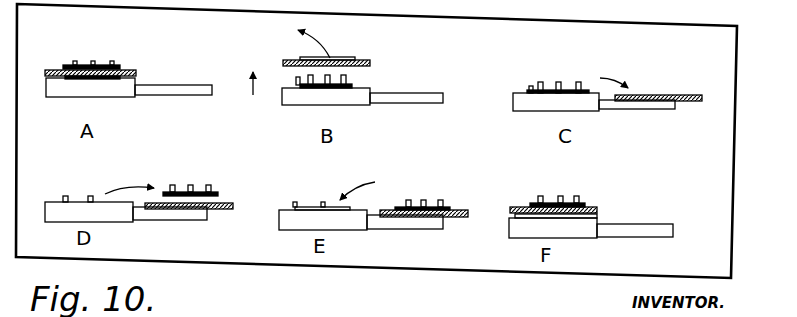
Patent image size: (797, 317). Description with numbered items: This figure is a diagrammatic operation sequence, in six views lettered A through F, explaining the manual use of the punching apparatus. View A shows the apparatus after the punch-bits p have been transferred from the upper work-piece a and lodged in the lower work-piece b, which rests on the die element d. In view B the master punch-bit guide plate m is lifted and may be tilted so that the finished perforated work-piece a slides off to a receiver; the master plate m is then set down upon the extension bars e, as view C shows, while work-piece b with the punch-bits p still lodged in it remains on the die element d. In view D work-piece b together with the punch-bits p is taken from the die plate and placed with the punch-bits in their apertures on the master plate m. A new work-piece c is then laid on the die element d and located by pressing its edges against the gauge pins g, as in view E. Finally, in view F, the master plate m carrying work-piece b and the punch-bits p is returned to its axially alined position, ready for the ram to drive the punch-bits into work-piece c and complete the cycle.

The upper work-piece a is at (120, 68).
The lower work-piece b is at (138, 78).
The new work-piece c is at (634, 216).
The die element d is at (120, 92).
The extension bars e is at (190, 96).
The gauge pins g is at (46, 80).
The master punch-bit guide plate m is at (136, 74).
The punch-bits p is at (93, 64).